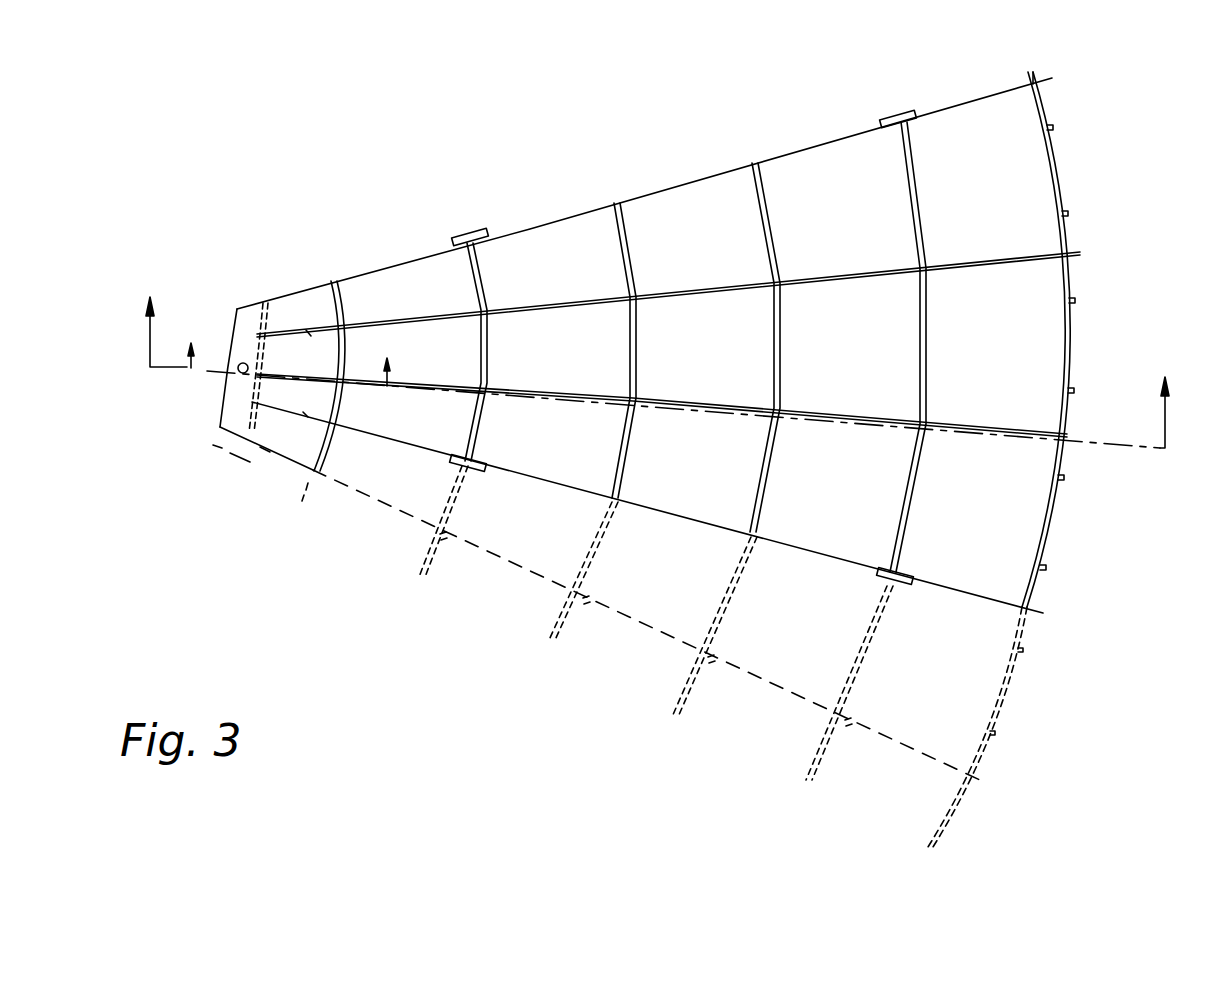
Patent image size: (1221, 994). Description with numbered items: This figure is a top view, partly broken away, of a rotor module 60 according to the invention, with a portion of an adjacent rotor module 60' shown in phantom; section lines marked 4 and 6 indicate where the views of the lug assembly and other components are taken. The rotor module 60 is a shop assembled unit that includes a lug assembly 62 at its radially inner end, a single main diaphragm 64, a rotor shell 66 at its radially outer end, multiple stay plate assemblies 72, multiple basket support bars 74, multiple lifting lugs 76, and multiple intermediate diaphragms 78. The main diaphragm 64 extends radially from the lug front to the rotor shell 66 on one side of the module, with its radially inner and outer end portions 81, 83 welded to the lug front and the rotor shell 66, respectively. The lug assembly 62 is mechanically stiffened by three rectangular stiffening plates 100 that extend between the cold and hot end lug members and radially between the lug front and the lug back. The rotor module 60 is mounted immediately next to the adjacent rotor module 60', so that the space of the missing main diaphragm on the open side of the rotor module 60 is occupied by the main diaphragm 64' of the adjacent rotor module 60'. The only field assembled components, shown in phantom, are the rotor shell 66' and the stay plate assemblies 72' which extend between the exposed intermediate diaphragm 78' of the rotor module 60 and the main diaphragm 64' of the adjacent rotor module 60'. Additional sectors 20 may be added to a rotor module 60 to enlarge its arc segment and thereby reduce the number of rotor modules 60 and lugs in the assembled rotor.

The sector 20 is at (1013, 127).
The rotor module 60 is at (1137, 241).
The adjacent rotor module 60' is at (1016, 841).
The lug assembly 62 is at (283, 290).
The main diaphragm 64 is at (644, 193).
The main diaphragm of adjacent rotor module 64' is at (596, 603).
The rotor shell 66 is at (1068, 339).
The field assembled rotor shell 66' is at (1002, 727).
The stay plate assembly 72 is at (730, 347).
The field assembled stay plate assembly 72' is at (656, 623).
The basket support bar 74 is at (340, 406).
The lifting lug 76 is at (478, 232).
The intermediate diaphragm 78 is at (668, 334).
The exposed intermediate diaphragm 78' is at (647, 507).
The radially inner end portion of main diaphragm 81 is at (260, 298).
The radially outer end portion of main diaphragm 83 is at (1040, 82).
The stiffening plate 100 is at (308, 330).
The section line 4- 4 is at (655, 357).
The section line 6- 6 is at (292, 351).